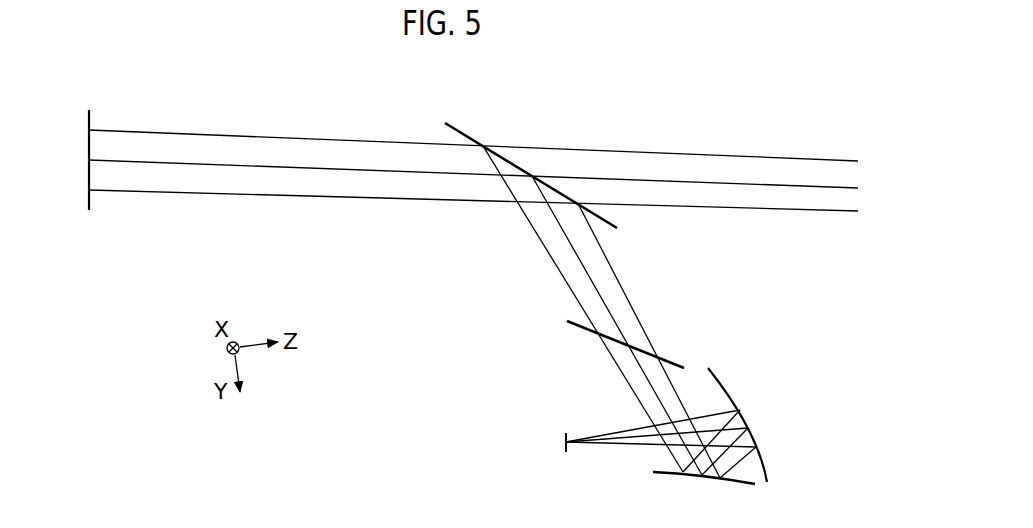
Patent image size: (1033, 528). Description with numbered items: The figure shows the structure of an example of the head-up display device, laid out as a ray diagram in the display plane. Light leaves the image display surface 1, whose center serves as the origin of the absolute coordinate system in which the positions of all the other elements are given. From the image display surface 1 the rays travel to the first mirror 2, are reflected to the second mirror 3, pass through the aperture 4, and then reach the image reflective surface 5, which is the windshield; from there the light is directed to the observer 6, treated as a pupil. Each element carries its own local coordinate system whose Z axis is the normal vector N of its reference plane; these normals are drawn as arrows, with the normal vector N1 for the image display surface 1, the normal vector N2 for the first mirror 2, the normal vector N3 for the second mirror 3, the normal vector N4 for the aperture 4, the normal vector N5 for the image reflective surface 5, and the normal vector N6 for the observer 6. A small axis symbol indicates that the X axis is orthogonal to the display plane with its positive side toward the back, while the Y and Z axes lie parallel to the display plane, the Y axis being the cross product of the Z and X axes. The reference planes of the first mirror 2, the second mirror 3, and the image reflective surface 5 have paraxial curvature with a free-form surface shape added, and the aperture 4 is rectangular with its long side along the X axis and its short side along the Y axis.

The image display surface 1 is at (565, 434).
The first mirror 2 is at (719, 377).
The second mirror 3 is at (663, 473).
The aperture 4 is at (670, 360).
The image reflective surface 5 is at (467, 134).
The observer 6 is at (89, 118).
The normal vector of image display surface N1 is at (604, 439).
The normal vector of first mirror N2 is at (767, 397).
The normal vector of second mirror N3 is at (693, 443).
The normal vector of aperture N4 is at (633, 315).
The normal vector of image reflective surface N5 is at (548, 148).
The normal vector of observer N6 is at (98, 160).